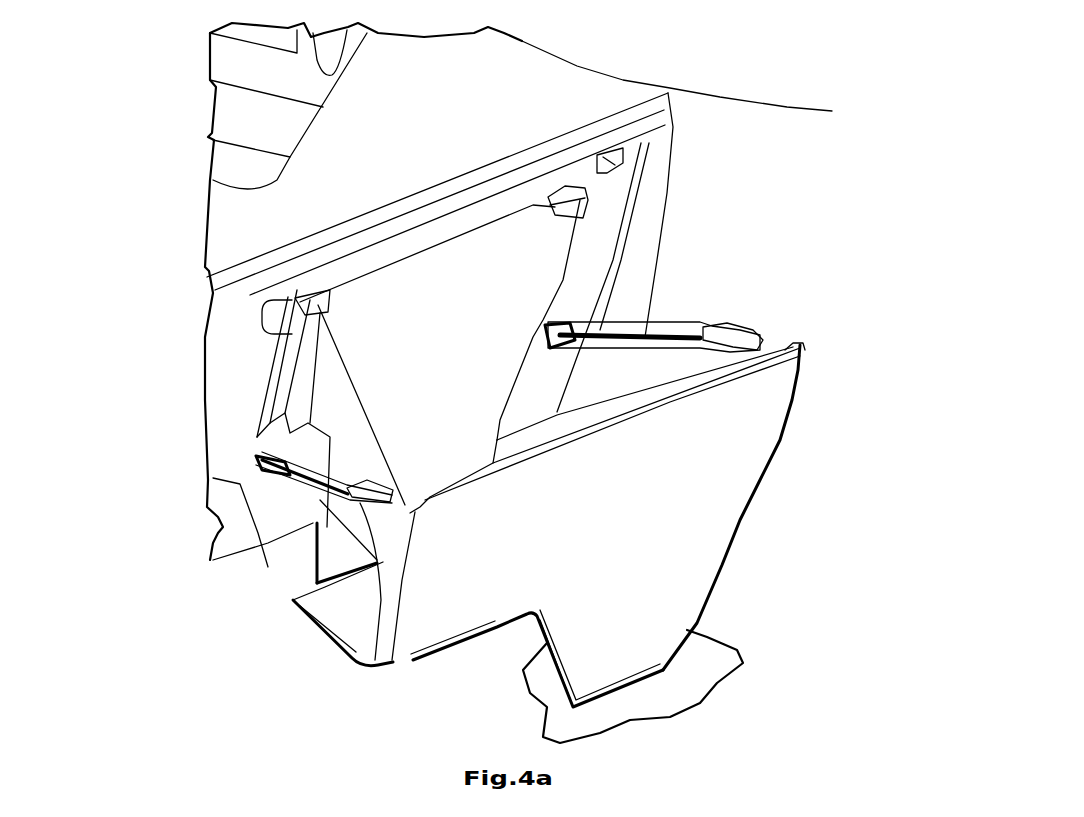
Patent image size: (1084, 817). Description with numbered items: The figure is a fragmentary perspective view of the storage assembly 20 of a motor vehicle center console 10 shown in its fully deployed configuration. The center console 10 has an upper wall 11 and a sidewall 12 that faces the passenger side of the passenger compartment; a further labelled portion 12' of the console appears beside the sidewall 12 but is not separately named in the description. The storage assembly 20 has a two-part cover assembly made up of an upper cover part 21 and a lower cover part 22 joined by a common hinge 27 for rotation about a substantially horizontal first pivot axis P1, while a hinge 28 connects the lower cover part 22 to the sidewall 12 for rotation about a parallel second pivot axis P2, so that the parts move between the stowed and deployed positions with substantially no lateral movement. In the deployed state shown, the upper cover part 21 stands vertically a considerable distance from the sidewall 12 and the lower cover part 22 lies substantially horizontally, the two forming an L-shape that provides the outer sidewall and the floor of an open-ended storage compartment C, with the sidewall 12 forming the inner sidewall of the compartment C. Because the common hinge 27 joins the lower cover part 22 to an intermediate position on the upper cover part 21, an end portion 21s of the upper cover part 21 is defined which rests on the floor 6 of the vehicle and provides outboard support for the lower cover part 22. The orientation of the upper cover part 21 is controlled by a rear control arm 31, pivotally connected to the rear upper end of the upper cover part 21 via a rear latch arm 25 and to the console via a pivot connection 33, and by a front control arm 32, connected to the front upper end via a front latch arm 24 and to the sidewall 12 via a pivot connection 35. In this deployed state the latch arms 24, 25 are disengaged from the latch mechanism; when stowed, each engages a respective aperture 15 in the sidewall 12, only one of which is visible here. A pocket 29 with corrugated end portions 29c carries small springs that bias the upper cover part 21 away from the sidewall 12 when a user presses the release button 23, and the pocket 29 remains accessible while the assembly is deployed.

The motor vehicle center console 10 is at (207, 185).
The upper wall 11 is at (240, 224).
The sidewall 12 is at (252, 436).
The pillar trim 12' is at (493, 252).
The aperture 15 is at (612, 167).
The storage assembly 20 is at (817, 405).
The upper cover part 21 is at (720, 567).
The end portion 21s is at (630, 677).
The lower cover part 22 is at (317, 630).
The release button 23 is at (262, 320).
The front latch arm 24 is at (770, 340).
The rear latch arm 25 is at (381, 486).
The common hinge 27 is at (387, 672).
The hinge 28 is at (318, 586).
The pocket 29 is at (401, 278).
The corrugated end portions 29c is at (318, 303).
The rear control arm 31 is at (300, 490).
The front control arm 32 is at (667, 330).
The pivot connection 33 is at (280, 450).
The pivot connection 35 is at (557, 330).
The floor 6 is at (697, 707).
The storage compartment C is at (527, 420).
The first pivot axis P1 is at (157, 649).
The second pivot axis P2 is at (240, 717).